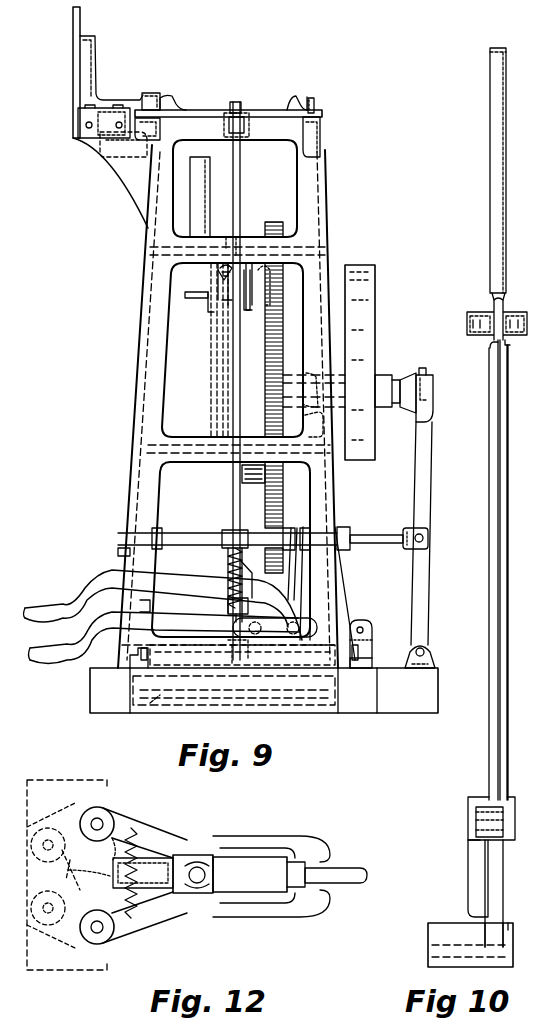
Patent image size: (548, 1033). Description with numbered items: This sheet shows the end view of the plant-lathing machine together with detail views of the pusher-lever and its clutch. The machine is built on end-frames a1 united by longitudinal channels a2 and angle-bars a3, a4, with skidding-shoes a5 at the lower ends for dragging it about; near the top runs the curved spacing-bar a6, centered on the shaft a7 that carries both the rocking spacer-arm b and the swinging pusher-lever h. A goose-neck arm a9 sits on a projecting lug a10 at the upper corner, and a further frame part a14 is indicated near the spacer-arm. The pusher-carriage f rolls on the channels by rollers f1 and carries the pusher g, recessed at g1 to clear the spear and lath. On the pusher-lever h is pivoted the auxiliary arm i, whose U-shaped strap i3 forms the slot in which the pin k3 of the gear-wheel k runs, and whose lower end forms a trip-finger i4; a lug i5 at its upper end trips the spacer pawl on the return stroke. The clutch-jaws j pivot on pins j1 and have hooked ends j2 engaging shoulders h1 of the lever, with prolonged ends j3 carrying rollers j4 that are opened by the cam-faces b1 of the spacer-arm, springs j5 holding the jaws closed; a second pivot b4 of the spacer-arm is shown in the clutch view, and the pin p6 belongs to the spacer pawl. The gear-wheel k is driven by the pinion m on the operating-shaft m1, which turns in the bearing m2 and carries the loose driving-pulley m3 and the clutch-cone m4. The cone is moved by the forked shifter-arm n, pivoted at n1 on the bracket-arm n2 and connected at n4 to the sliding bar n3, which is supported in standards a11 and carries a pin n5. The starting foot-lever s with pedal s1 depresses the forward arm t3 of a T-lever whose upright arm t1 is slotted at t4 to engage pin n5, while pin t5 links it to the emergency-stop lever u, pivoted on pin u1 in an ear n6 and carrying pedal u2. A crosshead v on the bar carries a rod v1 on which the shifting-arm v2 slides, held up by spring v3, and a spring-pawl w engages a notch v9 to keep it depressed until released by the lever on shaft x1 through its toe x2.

In FIG. 9, the end-frame a1 is at (322, 222).
In FIG. 9, the longitudinal channel a2 is at (162, 137).
In FIG. 9, the angle-bar a3 is at (306, 420).
In FIG. 9, the angle-bar a4 is at (110, 663).
In FIG. 9, the skidding-shoe a5 is at (92, 700).
In FIG. 9, the spacing-bar a6 is at (204, 200).
In FIG. 9, the shaft a7 is at (133, 702).
In FIG. 9, the goose-neck arm a9 is at (73, 21).
In FIG. 9, the projecting lug a10 is at (140, 143).
In FIG. 9, the standard a11 is at (118, 556).
In FIG. 9, the stop a14 is at (209, 312).
In FIG. 9, the spacer-arm b is at (210, 400).
In FIG. 12, the spacer-arm b is at (55, 972).
In FIG. 9, the cam-face b1 is at (250, 314).
In FIG. 12, the cam-face b1 is at (107, 948).
In FIG. 12, the slide pivot b4 is at (107, 803).
In FIG. 9, the pusher-carriage f is at (188, 108).
In FIG. 9, the roller f1 is at (160, 92).
In FIG. 9, the pusher g is at (110, 98).
In FIG. 9, the recess g1 is at (100, 150).
In FIG. 9, the pusher-lever h is at (244, 189).
In FIG. 10, the pusher-lever h is at (508, 250).
In FIG. 12, the pusher-lever h is at (250, 874).
In FIG. 12, the shoulder h1 is at (320, 858).
In FIG. 10, the auxiliary arm i is at (502, 533).
In FIG. 10, the U-shaped strap i3 is at (511, 580).
In FIG. 10, the trip-finger i4 is at (469, 900).
In FIG. 10, the projecting lug i5 is at (507, 299).
In FIG. 12, the projecting lug i5 is at (142, 858).
In FIG. 9, the clutch-jaw j is at (240, 325).
In FIG. 12, the clutch-jaw j is at (213, 841).
In FIG. 12, the pin j1 is at (196, 884).
In FIG. 12, the hooked end j2 is at (322, 880).
In FIG. 9, the prolonged end j3 is at (232, 240).
In FIG. 12, the prolonged end j3 is at (130, 822).
In FIG. 12, the roller j4 is at (87, 872).
In FIG. 9, the gear-wheel k is at (265, 356).
In FIG. 9, the pin k3 is at (250, 484).
In FIG. 9, the driving-pinion m is at (265, 392).
In FIG. 9, the operating-shaft m1 is at (403, 388).
In FIG. 9, the bearing m2 is at (298, 375).
In FIG. 9, the driving-pulley m3 is at (370, 312).
In FIG. 9, the clutch-cone m4 is at (430, 380).
In FIG. 9, the shifter-arm n is at (426, 485).
In FIG. 9, the pivot n1 is at (430, 655).
In FIG. 9, the bracket-arm n2 is at (435, 665).
In FIG. 9, the sliding bar n3 is at (375, 535).
In FIG. 9, the pivotal connection n4 is at (429, 539).
In FIG. 9, the pin n5 is at (292, 528).
In FIG. 9, the ear n6 is at (366, 643).
In FIG. 9, the pin p6 is at (188, 297).
In FIG. 9, the foot-lever s is at (84, 583).
In FIG. 9, the pedal s1 is at (45, 609).
In FIG. 9, the upright arm t1 is at (305, 580).
In FIG. 9, the forward arm t3 is at (150, 604).
In FIG. 9, the slot t4 is at (289, 550).
In FIG. 9, the pin t5 is at (348, 612).
In FIG. 9, the emergency-stop lever u is at (107, 611).
In FIG. 9, the pin u1 is at (366, 624).
In FIG. 9, the pedal u2 is at (45, 650).
In FIG. 9, the crosshead v is at (224, 531).
In FIG. 9, the rod v1 is at (245, 618).
In FIG. 9, the shifting-arm v2 is at (245, 575).
In FIG. 9, the tension-spring v3 is at (228, 568).
In FIG. 9, the notch v9 is at (249, 605).
In FIG. 9, the spring-pawl w is at (275, 627).
In FIG. 9, the shaft x1 is at (125, 657).
In FIG. 9, the toe x2 is at (275, 652).